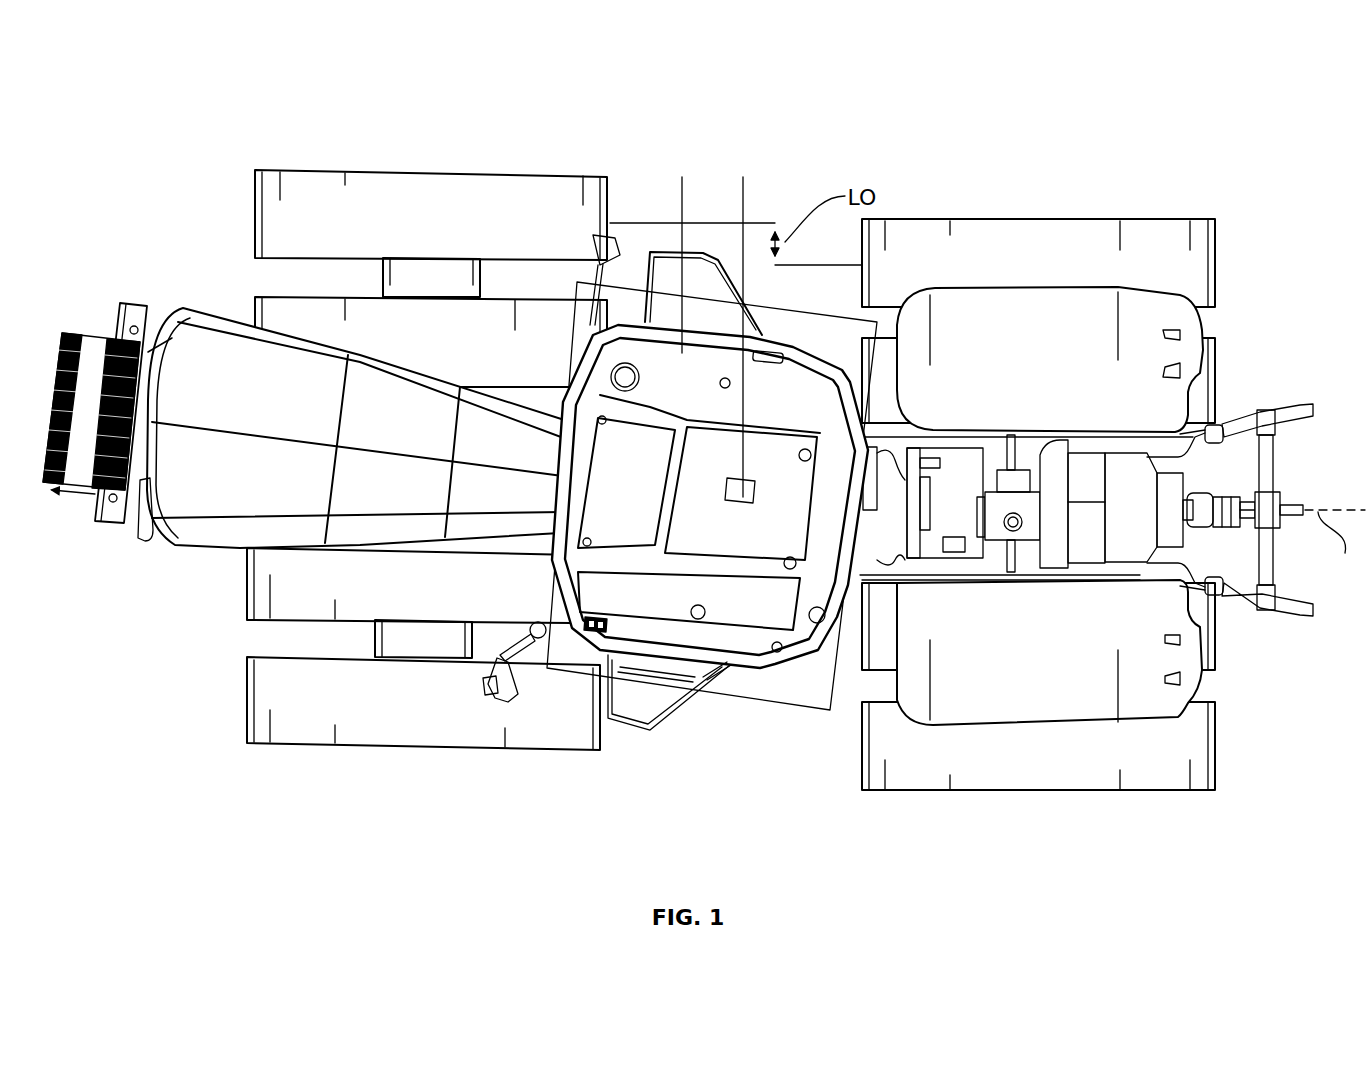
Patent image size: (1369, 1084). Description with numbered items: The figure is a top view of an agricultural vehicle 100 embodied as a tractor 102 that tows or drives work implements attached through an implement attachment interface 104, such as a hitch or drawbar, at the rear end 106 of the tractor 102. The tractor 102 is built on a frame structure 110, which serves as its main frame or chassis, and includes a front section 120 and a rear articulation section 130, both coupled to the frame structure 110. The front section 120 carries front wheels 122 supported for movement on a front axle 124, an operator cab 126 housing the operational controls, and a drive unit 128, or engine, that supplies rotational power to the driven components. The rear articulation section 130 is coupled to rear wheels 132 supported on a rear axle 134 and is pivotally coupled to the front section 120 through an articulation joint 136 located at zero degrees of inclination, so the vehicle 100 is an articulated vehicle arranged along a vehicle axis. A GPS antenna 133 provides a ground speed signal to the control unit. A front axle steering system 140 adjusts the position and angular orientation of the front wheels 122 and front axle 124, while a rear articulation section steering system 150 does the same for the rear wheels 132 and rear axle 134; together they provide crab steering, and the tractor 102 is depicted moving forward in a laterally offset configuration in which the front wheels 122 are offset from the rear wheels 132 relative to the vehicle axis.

The agricultural vehicle 100 is at (930, 117).
The tractor 102 is at (805, 163).
The implement attachment interface 104 is at (1288, 506).
The rear end 106 is at (1225, 428).
The frame structure 110 is at (718, 700).
The front section 120 is at (390, 427).
The front wheels 122 is at (327, 322).
The front axle 124 is at (398, 275).
The operator cab 126 is at (660, 383).
The drive unit 128 is at (190, 486).
The rear articulation section 130 is at (955, 515).
The rear wheels 132 is at (1213, 730).
The GPS antenna 133 is at (743, 480).
The rear axle 134 is at (1088, 262).
The articulation joint 136 is at (887, 508).
The front axle steering system 140 is at (613, 517).
The rear articulation section steering system 150 is at (763, 530).